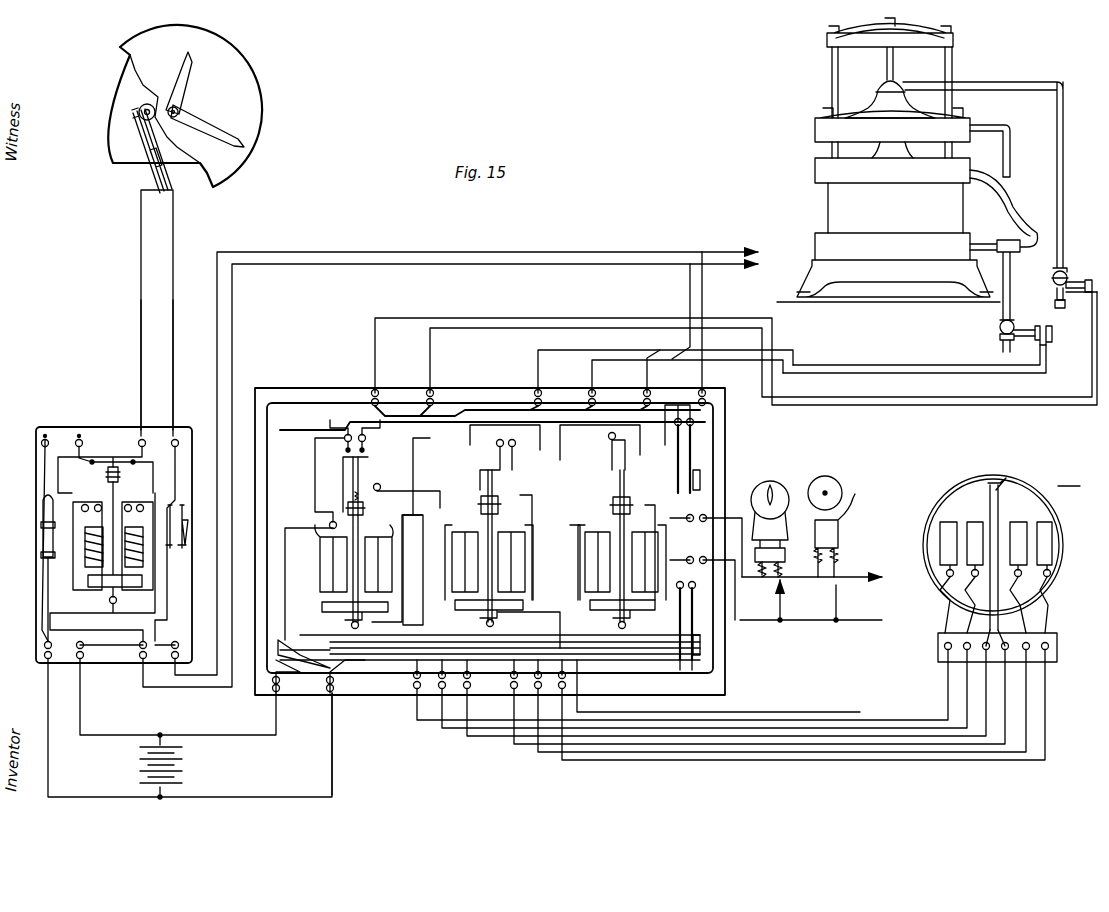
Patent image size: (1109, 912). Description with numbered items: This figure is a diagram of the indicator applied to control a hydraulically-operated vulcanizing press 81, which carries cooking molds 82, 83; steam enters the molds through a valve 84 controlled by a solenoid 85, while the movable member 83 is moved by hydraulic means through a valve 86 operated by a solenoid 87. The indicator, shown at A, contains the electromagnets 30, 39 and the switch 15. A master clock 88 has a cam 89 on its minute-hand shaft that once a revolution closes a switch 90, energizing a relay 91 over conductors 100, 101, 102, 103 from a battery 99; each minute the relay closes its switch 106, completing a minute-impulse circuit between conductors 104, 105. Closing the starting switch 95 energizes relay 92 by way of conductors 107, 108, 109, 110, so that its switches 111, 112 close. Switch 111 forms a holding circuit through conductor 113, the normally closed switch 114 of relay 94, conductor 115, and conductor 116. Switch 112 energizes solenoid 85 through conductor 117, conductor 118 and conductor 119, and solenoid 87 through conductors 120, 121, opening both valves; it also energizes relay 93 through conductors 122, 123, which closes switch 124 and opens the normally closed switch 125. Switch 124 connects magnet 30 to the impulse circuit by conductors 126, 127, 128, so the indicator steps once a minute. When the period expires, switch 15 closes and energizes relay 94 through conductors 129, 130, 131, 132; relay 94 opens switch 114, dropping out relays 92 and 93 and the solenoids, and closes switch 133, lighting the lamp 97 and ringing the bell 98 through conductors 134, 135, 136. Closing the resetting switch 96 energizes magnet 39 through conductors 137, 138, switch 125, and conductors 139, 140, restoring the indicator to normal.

The switch 15 is at (1005, 488).
The electromagnet 30 is at (940, 530).
The electromagnet 39 is at (1052, 548).
The press 81 is at (895, 125).
The cooking mold 82 is at (888, 267).
The cooking mold 83 is at (892, 145).
The valve 84 is at (1000, 326).
The solenoid 85 is at (1050, 332).
The valve 86 is at (1052, 272).
The solenoid 87 is at (1054, 294).
The master clock 88 is at (250, 94).
The cam 89 is at (139, 110).
The switch 90 is at (133, 128).
The relay 91 is at (36, 569).
The relay 92 is at (320, 560).
The relay 93 is at (452, 560).
The relay 94 is at (622, 549).
The switch 95 is at (705, 460).
The switch 96 is at (712, 630).
The lamp 97 is at (780, 485).
The bell 98 is at (838, 485).
The battery 99 is at (182, 766).
The conductor 100 is at (45, 456).
The conductor 101 is at (174, 252).
The conductor 102 is at (141, 379).
The conductor 103 is at (73, 590).
The conductor 104 is at (352, 266).
The conductor 105 is at (354, 256).
The switch 106 is at (107, 473).
The conductor 107 is at (276, 738).
The conductor 108 is at (393, 432).
The conductor 109 is at (300, 512).
The conductor 110 is at (332, 746).
The switch 111 is at (362, 488).
The switch 112 is at (343, 436).
The conductor 113 is at (613, 497).
The switch 114 is at (610, 444).
The conductor 115 is at (372, 628).
The conductor 116 is at (445, 604).
The conductor 117 is at (580, 352).
The conductor 118 is at (845, 373).
The conductor 119 is at (312, 473).
The conductor 120 is at (447, 318).
The conductor 121 is at (948, 402).
The conductor 122 is at (540, 452).
The conductor 123 is at (445, 480).
The switch 124 is at (481, 498).
The switch 125 is at (495, 452).
The conductor 126 is at (690, 292).
The conductor 127 is at (450, 734).
The conductor 128 is at (417, 722).
The conductor 129 is at (600, 500).
The conductor 130 is at (1056, 701).
The conductor 131 is at (486, 740).
The conductor 132 is at (355, 672).
The switch 133 is at (645, 505).
The conductor 134 is at (310, 672).
The conductor 135 is at (735, 500).
The conductor 136 is at (585, 684).
The conductor 137 is at (702, 577).
The conductor 138 is at (698, 698).
The conductor 139 is at (548, 605).
The conductor 140 is at (552, 760).